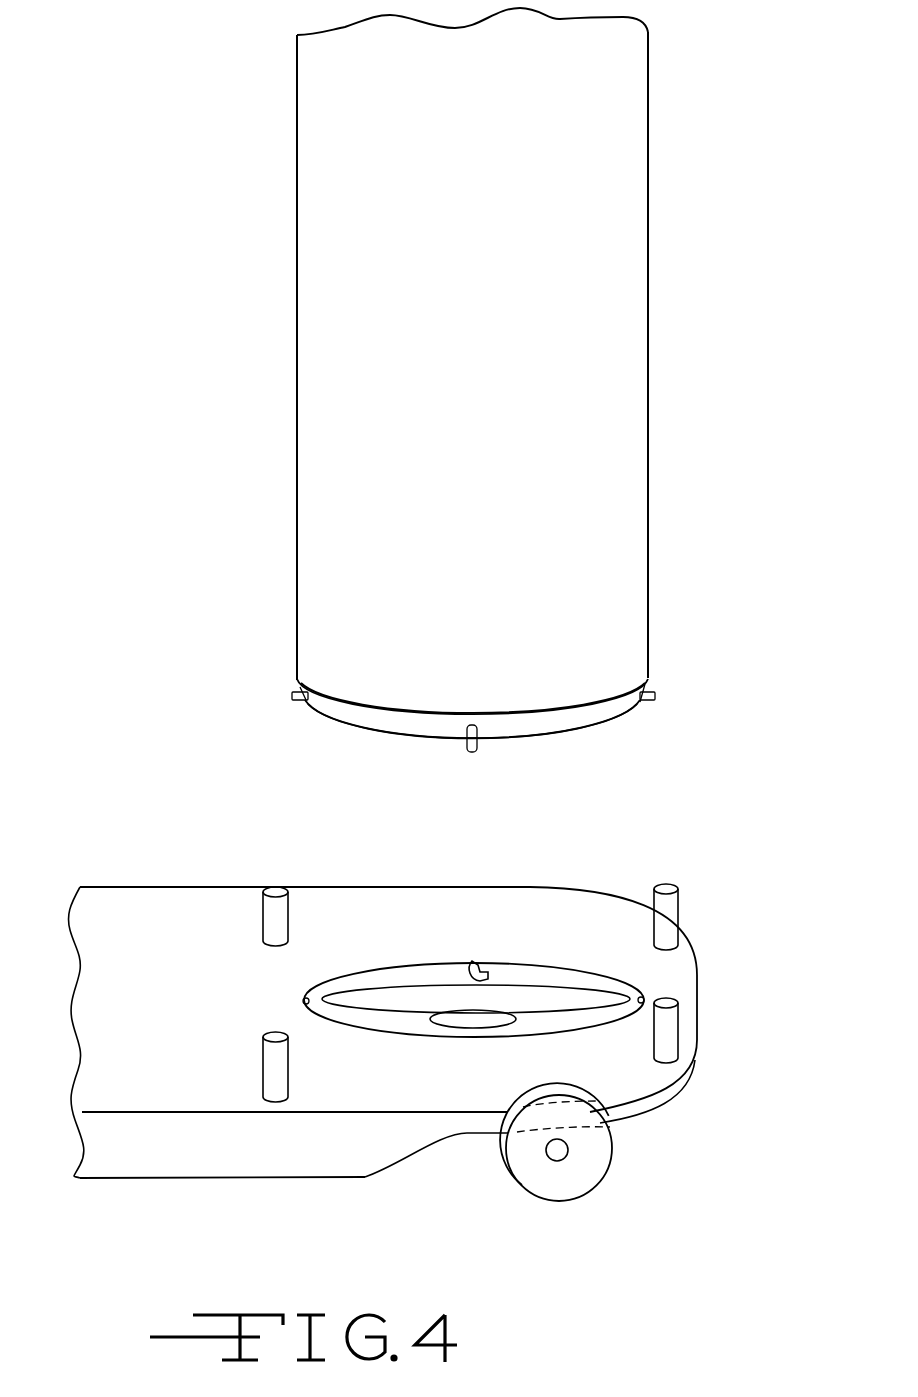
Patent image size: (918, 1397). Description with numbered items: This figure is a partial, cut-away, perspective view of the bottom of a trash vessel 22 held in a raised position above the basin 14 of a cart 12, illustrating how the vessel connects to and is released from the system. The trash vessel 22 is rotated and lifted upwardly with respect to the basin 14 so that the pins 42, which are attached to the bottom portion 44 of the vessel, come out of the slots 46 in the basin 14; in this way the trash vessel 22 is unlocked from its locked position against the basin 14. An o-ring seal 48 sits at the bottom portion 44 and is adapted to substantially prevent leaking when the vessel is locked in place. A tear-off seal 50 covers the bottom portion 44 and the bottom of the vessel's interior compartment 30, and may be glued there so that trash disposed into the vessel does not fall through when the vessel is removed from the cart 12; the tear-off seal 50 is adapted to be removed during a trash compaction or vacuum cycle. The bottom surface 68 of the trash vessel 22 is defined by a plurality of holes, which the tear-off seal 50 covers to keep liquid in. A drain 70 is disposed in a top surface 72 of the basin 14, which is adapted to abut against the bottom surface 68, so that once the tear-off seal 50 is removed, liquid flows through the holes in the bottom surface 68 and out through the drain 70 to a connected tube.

The trash vessel 22 is at (655, 285).
The o-ring seal 48 is at (577, 706).
The interior compartment 30 is at (393, 748).
The tear-off seal 50 is at (572, 742).
The bottom portion 44 is at (360, 713).
The bottom surface 68 is at (606, 728).
The pins 42 is at (297, 700).
The cart 12 is at (387, 1165).
The basin 14 is at (441, 1128).
The drain 70 is at (482, 1022).
The top surface 72 is at (373, 1018).
The slots 46 is at (490, 983).